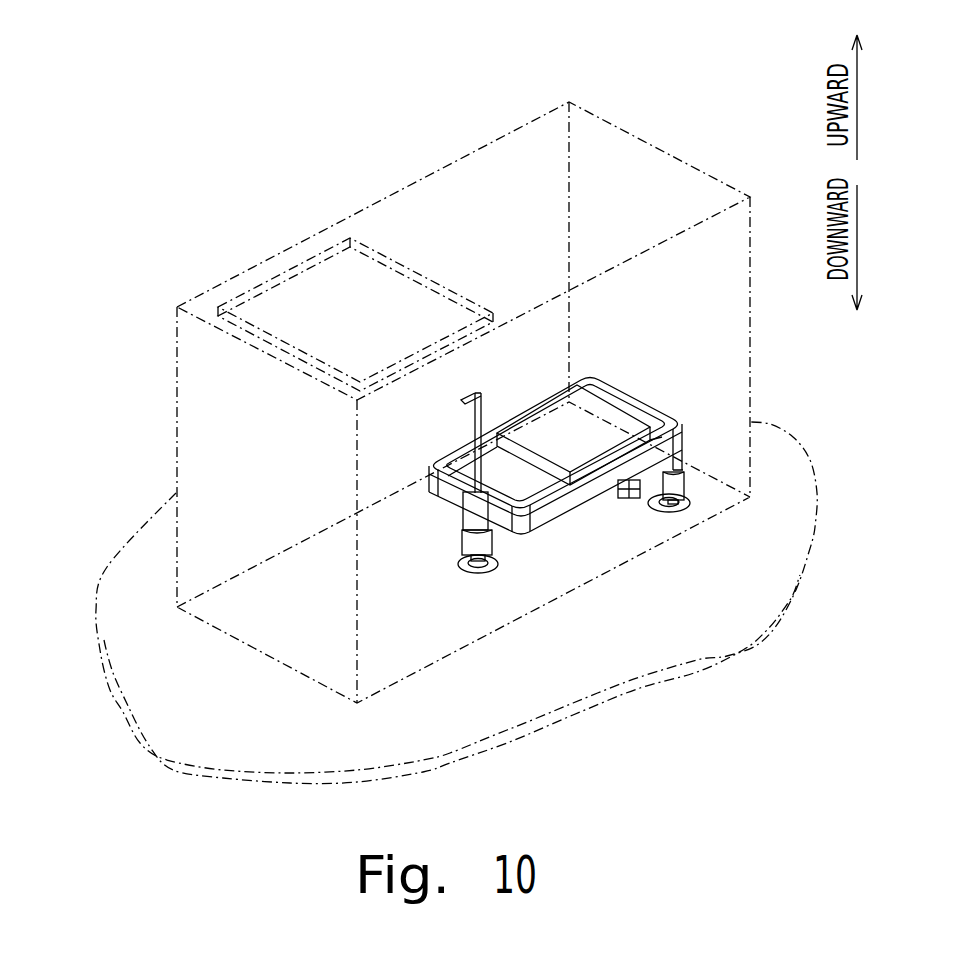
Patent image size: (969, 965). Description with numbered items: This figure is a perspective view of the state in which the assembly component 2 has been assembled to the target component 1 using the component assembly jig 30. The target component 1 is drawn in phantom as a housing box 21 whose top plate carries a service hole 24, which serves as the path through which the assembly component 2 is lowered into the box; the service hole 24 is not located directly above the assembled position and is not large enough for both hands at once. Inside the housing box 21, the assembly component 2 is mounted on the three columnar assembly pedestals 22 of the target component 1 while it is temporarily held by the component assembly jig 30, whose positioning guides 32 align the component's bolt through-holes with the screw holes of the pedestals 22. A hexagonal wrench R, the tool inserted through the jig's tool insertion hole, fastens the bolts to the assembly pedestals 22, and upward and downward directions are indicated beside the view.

The target component 1 is at (142, 562).
The assembly component 2 is at (580, 512).
The housing box 21 is at (410, 187).
The assembly pedestals 22 is at (480, 567).
The service hole 24 is at (353, 252).
The component assembly jig 30 is at (550, 417).
The positioning guides 32 is at (467, 543).
The hexagonal wrench R is at (482, 414).